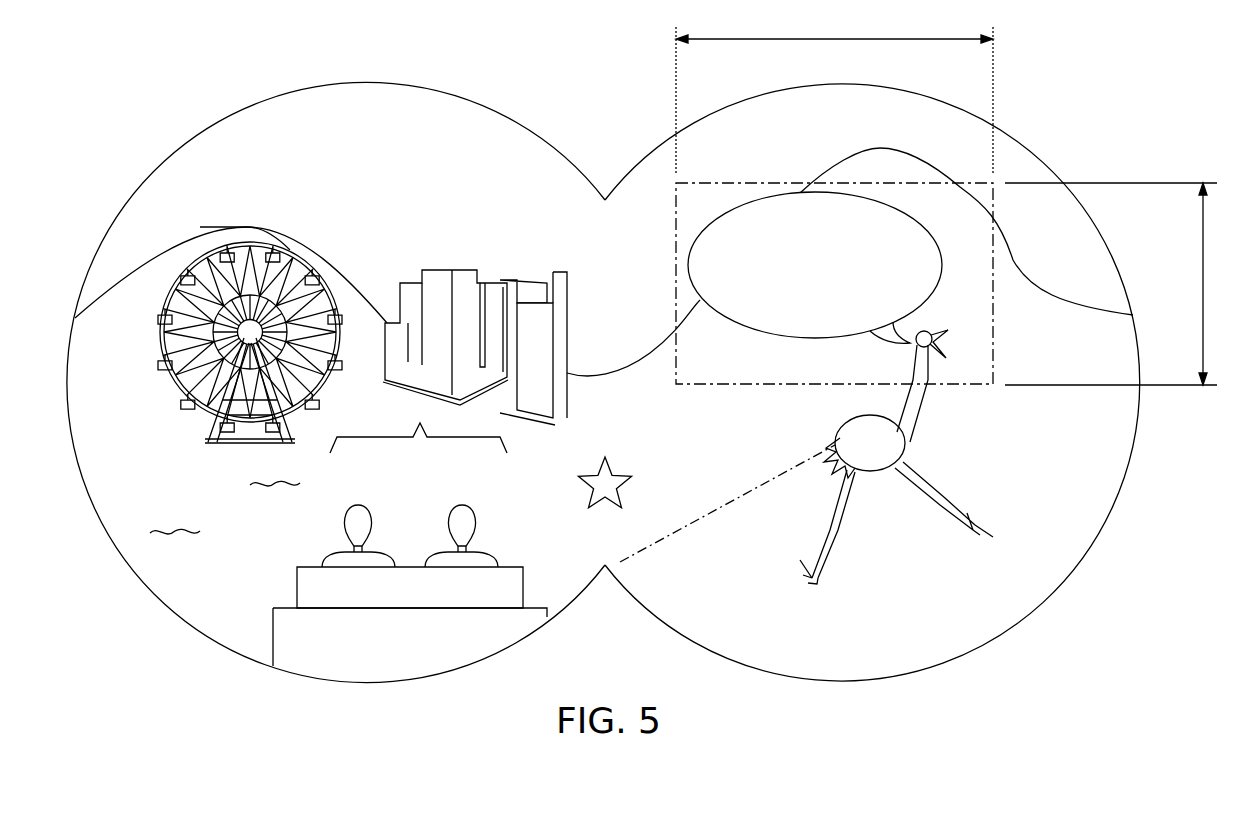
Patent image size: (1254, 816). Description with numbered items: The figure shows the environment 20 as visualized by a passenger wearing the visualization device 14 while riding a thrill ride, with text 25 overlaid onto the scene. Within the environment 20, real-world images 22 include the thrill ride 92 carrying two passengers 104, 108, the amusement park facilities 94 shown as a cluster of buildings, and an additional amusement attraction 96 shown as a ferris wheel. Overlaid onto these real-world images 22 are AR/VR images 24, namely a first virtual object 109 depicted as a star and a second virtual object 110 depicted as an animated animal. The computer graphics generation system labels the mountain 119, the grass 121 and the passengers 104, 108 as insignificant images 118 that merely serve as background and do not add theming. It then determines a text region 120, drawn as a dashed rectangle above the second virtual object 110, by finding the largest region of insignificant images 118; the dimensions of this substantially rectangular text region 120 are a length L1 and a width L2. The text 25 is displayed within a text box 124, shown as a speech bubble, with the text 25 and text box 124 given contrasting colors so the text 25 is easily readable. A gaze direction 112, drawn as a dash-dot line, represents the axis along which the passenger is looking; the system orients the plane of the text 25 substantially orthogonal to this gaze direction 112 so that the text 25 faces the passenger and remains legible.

The visualization device 14 is at (525, 85).
The environment 20 is at (188, 108).
The real-world images 22 is at (327, 339).
The AR/VR images 24 is at (783, 474).
The text 25 is at (878, 228).
The thrill ride 92 is at (412, 567).
The facilities 94 is at (467, 270).
The additional amusement attraction 96 is at (160, 350).
The passenger 104 is at (367, 515).
The passenger 108 is at (471, 515).
The first virtual object 109 is at (600, 505).
The second virtual object 110 is at (810, 580).
The gaze direction 112 is at (718, 487).
The insignificant images 118 is at (332, 243).
The mountain 119 is at (243, 227).
The text region 120 is at (663, 250).
The grass 121 is at (172, 536).
The text box 124 is at (824, 284).
The length of text region L1 is at (1205, 285).
The width of text region L2 is at (835, 39).